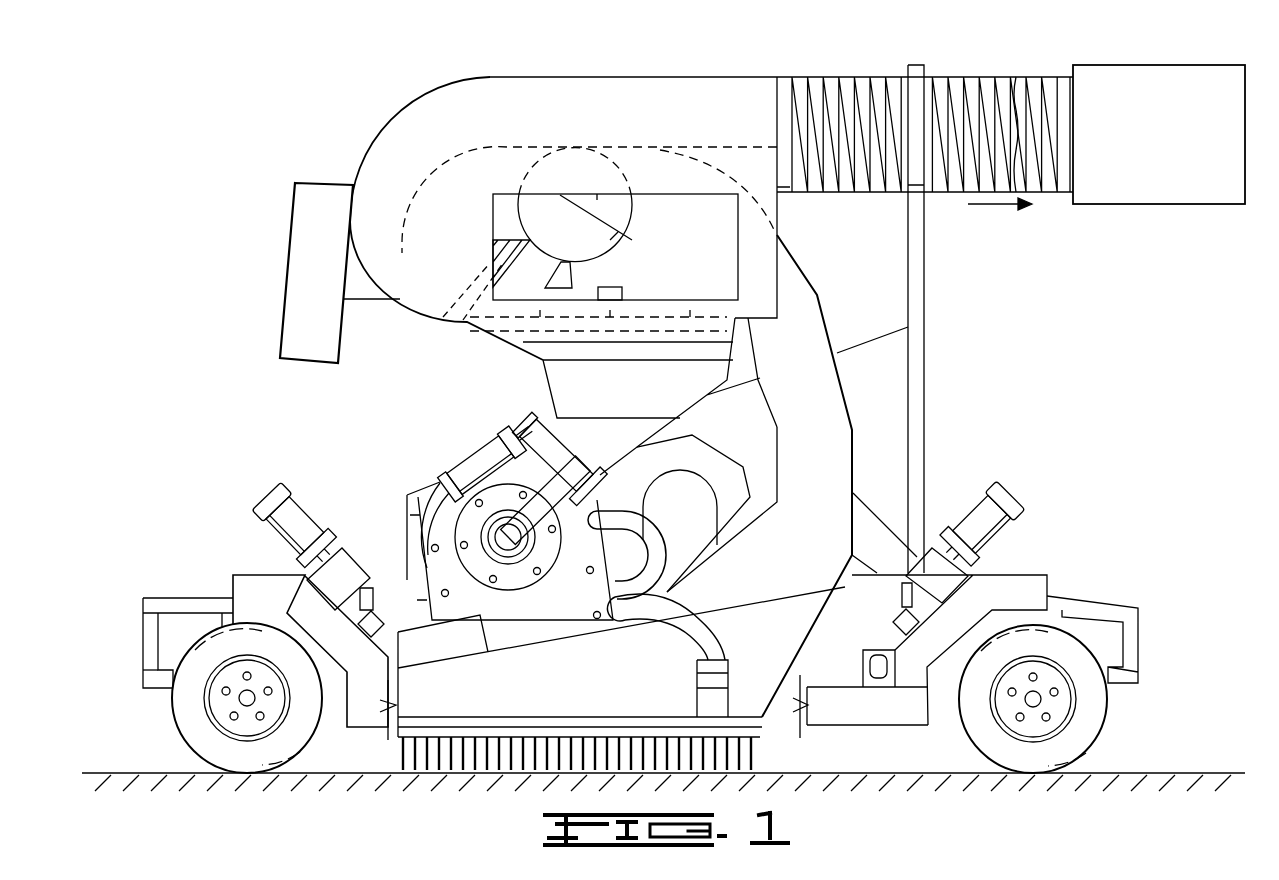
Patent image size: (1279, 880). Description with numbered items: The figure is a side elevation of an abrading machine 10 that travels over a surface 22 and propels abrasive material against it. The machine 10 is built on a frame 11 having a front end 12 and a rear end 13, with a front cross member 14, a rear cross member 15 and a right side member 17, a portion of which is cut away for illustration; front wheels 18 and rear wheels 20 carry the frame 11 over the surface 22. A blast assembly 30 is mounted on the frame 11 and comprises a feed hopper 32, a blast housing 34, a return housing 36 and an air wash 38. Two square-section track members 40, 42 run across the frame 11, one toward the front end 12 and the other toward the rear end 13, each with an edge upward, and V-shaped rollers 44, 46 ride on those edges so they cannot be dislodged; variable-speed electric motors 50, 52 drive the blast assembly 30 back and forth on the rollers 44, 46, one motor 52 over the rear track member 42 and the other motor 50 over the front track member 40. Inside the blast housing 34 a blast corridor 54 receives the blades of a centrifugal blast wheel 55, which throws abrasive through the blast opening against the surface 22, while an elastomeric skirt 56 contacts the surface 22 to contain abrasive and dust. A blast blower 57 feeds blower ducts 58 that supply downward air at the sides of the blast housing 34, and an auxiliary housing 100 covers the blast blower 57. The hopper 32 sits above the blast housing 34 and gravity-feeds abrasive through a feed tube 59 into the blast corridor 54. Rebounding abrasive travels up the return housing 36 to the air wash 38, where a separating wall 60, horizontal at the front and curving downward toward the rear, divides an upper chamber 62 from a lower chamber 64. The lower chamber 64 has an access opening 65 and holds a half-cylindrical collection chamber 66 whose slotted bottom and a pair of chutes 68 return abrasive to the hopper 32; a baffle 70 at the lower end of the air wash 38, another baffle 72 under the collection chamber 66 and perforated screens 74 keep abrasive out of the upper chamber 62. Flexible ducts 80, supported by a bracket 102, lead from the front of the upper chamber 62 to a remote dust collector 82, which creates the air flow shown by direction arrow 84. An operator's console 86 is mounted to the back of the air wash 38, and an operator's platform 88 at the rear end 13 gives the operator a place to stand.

The abrading machine 10 is at (266, 196).
The frame 11 is at (637, 534).
The front end 12 is at (1140, 642).
The rear end 13 is at (143, 680).
The front cross member 14 is at (1015, 588).
The rear cross member 15 is at (272, 574).
The right side member 17 is at (360, 715).
The front wheels 18 is at (1110, 715).
The rear wheels 20 is at (175, 730).
The surface 22 is at (897, 770).
The blast assembly 30 is at (402, 486).
The feed hopper 32 is at (568, 392).
The blast housing 34 is at (550, 690).
The return housing 36 is at (856, 452).
The air wash 38 is at (626, 78).
The track member 40 is at (985, 545).
The track member 42 is at (385, 560).
The roller 44 is at (900, 602).
The roller 46 is at (390, 585).
The variable-speed electric motor 50 is at (1012, 490).
The variable-speed electric motor 52 is at (265, 485).
The blast corridor 54 is at (518, 622).
The centrifugal blast wheel 55 is at (466, 458).
The elastomeric skirt 56 is at (580, 757).
The blast blower 57 is at (700, 455).
The blower ducts 58 is at (672, 635).
The feed tube 59 is at (520, 428).
The separating wall 60 is at (429, 158).
The upper chamber 62 is at (535, 102).
The lower chamber 64 is at (715, 238).
The access opening 65 is at (597, 194).
The collection chamber 66 is at (632, 240).
The chutes 68 is at (487, 338).
The baffle 70 is at (622, 292).
The baffle 72 is at (578, 280).
The screens 74 is at (470, 285).
The flexible ducts 80 is at (1014, 77).
The remote dust collector 82 is at (1118, 65).
The direction arrow 84 is at (1003, 210).
The operator's console 86 is at (290, 263).
The operator's platform 88 is at (180, 605).
The auxiliary housing 100 is at (876, 335).
The bracket 102 is at (914, 65).